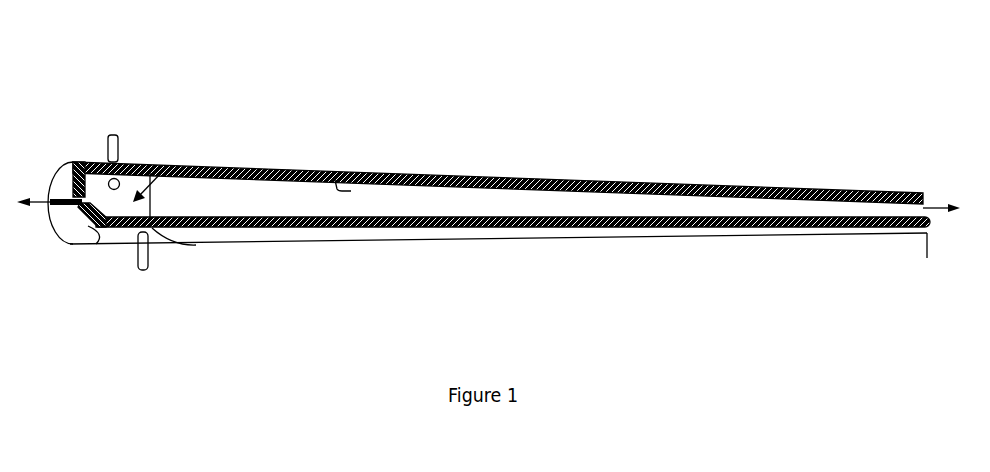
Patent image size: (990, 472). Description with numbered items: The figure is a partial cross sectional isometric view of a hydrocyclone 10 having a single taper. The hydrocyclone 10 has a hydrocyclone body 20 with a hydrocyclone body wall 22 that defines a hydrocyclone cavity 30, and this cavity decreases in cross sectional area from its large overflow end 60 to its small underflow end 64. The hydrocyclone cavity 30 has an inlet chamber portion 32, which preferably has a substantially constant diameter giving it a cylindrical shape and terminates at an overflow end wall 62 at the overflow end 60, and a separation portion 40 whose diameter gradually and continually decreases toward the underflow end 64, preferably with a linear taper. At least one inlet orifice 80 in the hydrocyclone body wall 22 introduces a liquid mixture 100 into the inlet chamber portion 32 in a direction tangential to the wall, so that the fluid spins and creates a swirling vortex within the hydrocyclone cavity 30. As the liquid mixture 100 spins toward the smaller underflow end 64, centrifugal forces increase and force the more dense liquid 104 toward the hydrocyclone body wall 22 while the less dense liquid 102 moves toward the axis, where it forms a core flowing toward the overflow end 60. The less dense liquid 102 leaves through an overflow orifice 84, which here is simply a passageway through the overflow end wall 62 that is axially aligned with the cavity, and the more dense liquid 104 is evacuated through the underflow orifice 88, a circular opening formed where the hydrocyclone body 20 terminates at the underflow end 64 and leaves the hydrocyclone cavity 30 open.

The hydrocyclone 10 is at (594, 80).
The hydrocyclone body 20 is at (513, 273).
The hydrocyclone body wall 22 is at (351, 190).
The hydrocyclone cavity 30 is at (508, 207).
The inlet chamber portion 32 is at (168, 154).
The separation portion 40 is at (703, 160).
The overflow end 60 is at (70, 232).
The overflow end wall 62 is at (92, 162).
The underflow end 64 is at (927, 258).
The inlet orifice 80 is at (137, 140).
The overflow orifice 84 is at (72, 190).
The underflow orifice 88 is at (941, 155).
The liquid mixture 100 is at (136, 208).
The less dense liquid 102 is at (33, 205).
The more dense liquid 104 is at (897, 278).